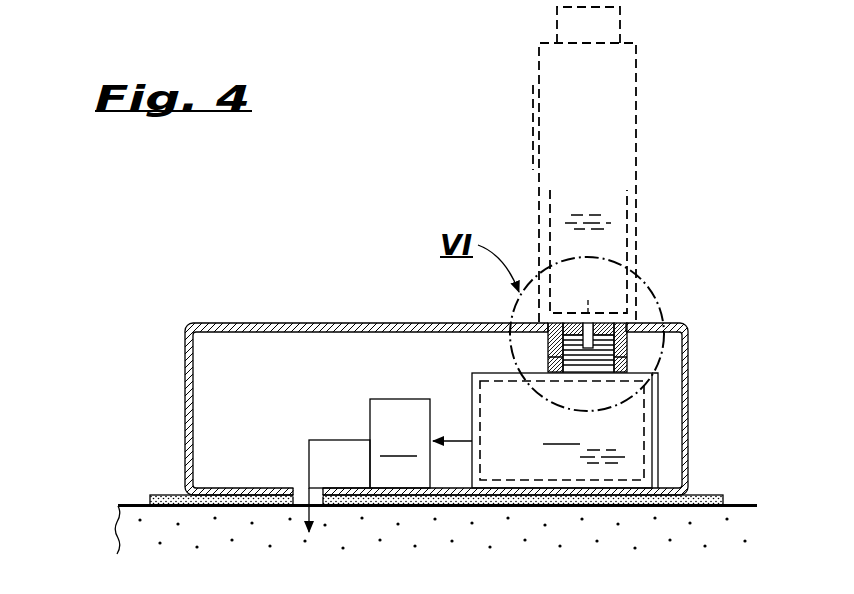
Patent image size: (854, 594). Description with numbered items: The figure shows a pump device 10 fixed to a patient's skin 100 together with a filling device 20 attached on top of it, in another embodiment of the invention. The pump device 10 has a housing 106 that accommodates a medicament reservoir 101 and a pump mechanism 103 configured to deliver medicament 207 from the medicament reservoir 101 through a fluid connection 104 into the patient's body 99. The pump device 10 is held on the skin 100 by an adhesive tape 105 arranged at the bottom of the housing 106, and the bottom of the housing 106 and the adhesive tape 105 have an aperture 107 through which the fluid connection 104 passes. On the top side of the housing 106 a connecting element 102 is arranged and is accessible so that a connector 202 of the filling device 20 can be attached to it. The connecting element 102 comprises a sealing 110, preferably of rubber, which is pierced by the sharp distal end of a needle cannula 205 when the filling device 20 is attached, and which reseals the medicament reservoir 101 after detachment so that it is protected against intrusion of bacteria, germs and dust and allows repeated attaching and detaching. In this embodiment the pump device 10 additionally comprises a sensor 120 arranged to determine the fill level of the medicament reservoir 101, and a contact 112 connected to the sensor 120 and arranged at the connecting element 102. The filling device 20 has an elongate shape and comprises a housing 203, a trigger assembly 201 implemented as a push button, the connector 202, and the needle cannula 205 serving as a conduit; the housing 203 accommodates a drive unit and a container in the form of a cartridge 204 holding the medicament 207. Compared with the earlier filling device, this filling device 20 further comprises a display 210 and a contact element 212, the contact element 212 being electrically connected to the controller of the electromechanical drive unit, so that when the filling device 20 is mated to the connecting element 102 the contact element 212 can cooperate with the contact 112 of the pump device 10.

The pump device 10 is at (215, 310).
The filling device 20 is at (593, 164).
The patient's body 99 is at (128, 538).
The patient's skin 100 is at (138, 503).
The medicament reservoir 101 is at (562, 430).
The connecting element 102 is at (623, 352).
The pump mechanism 103 is at (421, 443).
The fluid connection 104 is at (332, 440).
The adhesive tape 105 is at (705, 493).
The housing 106 is at (340, 322).
The aperture 107 is at (300, 486).
The sealing 110 is at (602, 300).
The contact 112 is at (549, 366).
The sensor 120 is at (659, 440).
The trigger assembly 201 is at (605, 25).
The connector 202 is at (640, 336).
The housing 203 is at (539, 62).
The cartridge 204 is at (530, 203).
The needle cannula 205 is at (596, 330).
The medicament 207 is at (615, 218).
The display 210 is at (533, 145).
The contact element 212 is at (552, 326).